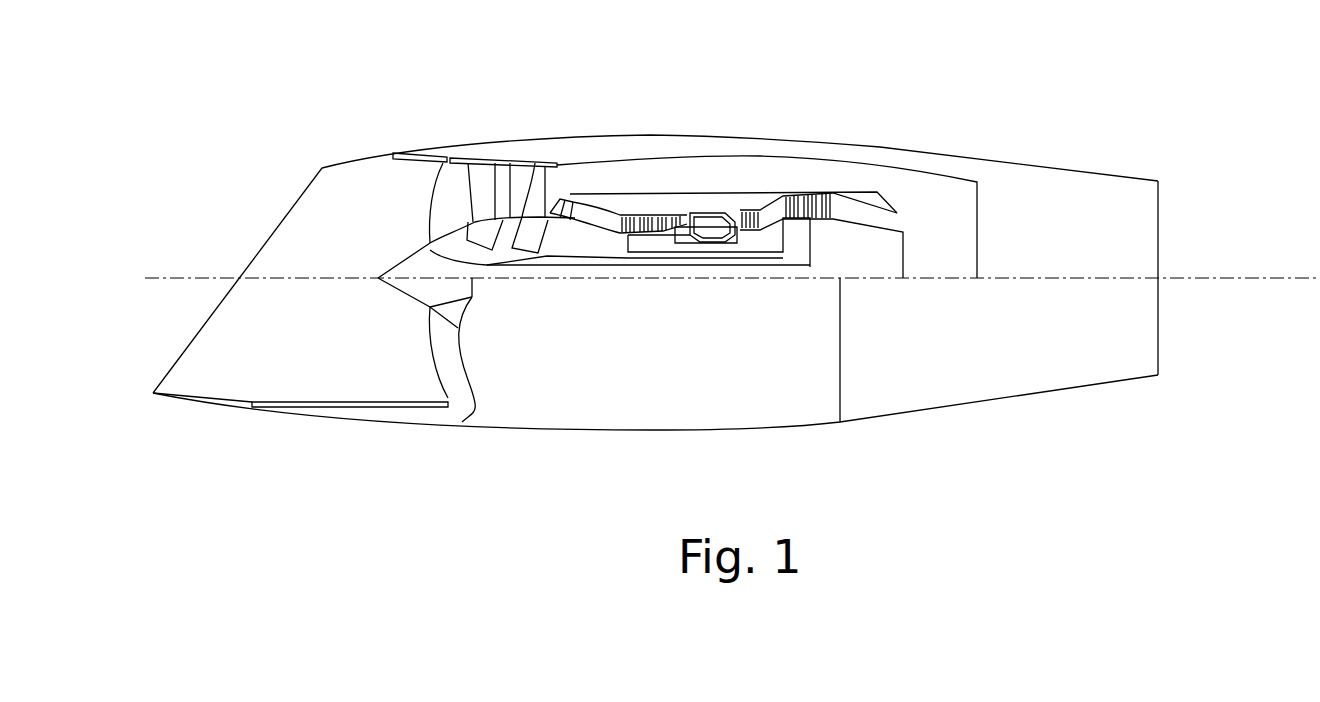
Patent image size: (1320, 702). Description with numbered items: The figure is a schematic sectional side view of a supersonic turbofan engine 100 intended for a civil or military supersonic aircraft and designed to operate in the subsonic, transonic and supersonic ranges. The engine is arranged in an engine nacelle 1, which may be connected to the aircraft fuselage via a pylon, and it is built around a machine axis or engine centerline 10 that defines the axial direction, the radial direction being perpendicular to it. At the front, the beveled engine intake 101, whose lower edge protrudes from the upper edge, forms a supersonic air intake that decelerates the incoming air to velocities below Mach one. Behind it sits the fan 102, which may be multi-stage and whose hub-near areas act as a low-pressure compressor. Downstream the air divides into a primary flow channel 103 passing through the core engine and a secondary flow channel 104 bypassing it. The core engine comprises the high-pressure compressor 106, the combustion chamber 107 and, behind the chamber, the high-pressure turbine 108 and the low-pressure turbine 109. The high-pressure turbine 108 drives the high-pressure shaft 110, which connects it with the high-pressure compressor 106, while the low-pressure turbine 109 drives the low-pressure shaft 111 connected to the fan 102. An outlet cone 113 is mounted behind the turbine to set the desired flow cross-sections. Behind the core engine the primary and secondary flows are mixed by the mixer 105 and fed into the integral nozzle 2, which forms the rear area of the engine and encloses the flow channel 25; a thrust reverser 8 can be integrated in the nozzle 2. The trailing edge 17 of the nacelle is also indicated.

The engine nacelle 1 is at (583, 432).
The nozzle 2 is at (1080, 163).
The thrust reverser 8 is at (917, 424).
The engine centerline 10 is at (265, 282).
The trailing edge 17 is at (1158, 203).
The flow channel 25 is at (957, 197).
The turbofan engine 100 is at (573, 109).
The engine intake 101 is at (357, 163).
The fan 102 is at (485, 147).
The primary flow channel 103 is at (603, 230).
The secondary flow channel 104 is at (655, 175).
The mixer 105 is at (877, 200).
The high-pressure compressor 106 is at (660, 240).
The combustion chamber 107 is at (712, 199).
The high-pressure turbine 108 is at (773, 231).
The low-pressure turbine 109 is at (798, 227).
The high-pressure shaft 110 is at (707, 243).
The low-pressure shaft 111 is at (560, 262).
The outlet cone 113 is at (900, 230).